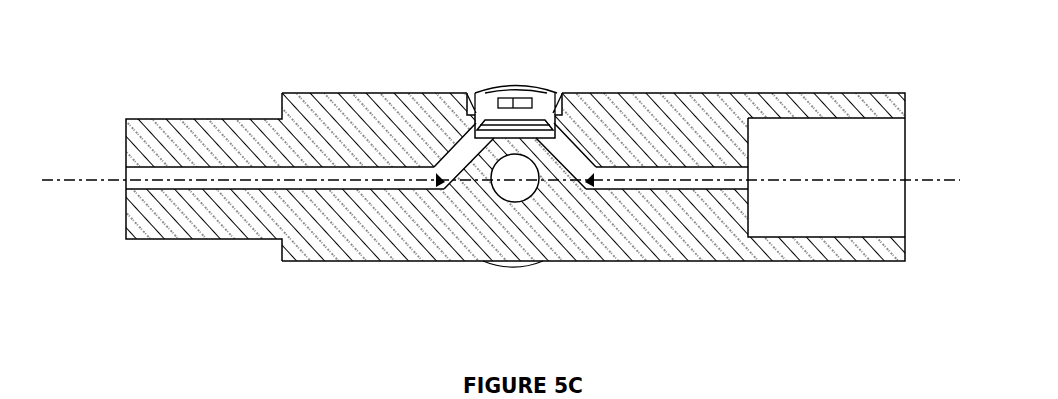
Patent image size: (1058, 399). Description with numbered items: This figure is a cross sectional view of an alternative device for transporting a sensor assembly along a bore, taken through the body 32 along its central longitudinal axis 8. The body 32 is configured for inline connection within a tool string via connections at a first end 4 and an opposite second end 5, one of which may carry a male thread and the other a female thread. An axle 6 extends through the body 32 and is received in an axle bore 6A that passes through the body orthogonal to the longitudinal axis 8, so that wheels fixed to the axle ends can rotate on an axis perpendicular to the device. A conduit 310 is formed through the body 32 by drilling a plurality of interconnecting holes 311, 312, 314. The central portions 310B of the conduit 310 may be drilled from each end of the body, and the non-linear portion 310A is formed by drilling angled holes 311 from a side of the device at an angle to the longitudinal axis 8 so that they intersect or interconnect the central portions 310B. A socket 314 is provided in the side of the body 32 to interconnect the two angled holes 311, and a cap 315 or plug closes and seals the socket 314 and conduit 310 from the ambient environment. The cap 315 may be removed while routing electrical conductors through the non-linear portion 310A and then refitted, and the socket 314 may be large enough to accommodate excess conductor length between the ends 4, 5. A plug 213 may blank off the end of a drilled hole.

The first end 4 is at (153, 133).
The second end 5 is at (845, 198).
The axle 6 is at (518, 185).
The axle bore 6A is at (510, 200).
The central longitudinal axis 8 is at (950, 177).
The body 32 is at (333, 238).
The plug 213 is at (407, 202).
The conduit 310 is at (233, 167).
The non-linear portion 310A is at (452, 157).
The central portions 310B is at (327, 172).
The angled holes 311 is at (466, 147).
The holes 312 is at (242, 175).
The socket 314 is at (520, 132).
The cap 315 is at (487, 113).